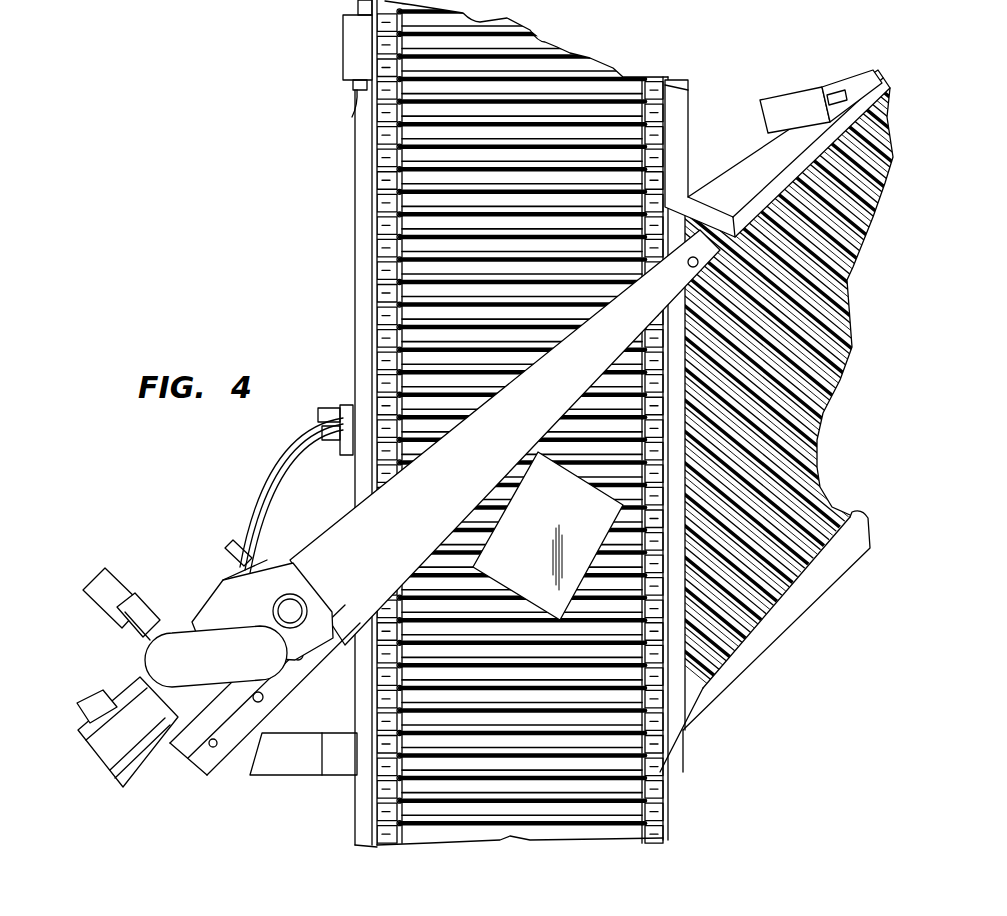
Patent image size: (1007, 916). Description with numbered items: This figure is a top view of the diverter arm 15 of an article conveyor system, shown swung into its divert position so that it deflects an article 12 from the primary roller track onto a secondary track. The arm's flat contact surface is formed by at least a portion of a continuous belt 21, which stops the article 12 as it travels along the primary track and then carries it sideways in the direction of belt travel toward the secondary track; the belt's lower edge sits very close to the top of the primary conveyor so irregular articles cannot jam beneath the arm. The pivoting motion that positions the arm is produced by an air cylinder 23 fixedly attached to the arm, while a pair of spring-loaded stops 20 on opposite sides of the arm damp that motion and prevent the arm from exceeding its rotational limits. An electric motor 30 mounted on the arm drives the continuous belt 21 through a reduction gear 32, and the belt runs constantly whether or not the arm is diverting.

The article 12 is at (594, 535).
The diverter arm 15 is at (470, 482).
The spring-loaded stops 20 is at (130, 607).
The continuous belt 21 is at (518, 473).
The air cylinder 23 is at (215, 607).
The electric motor 30 is at (143, 737).
The reduction gear 32 is at (137, 663).